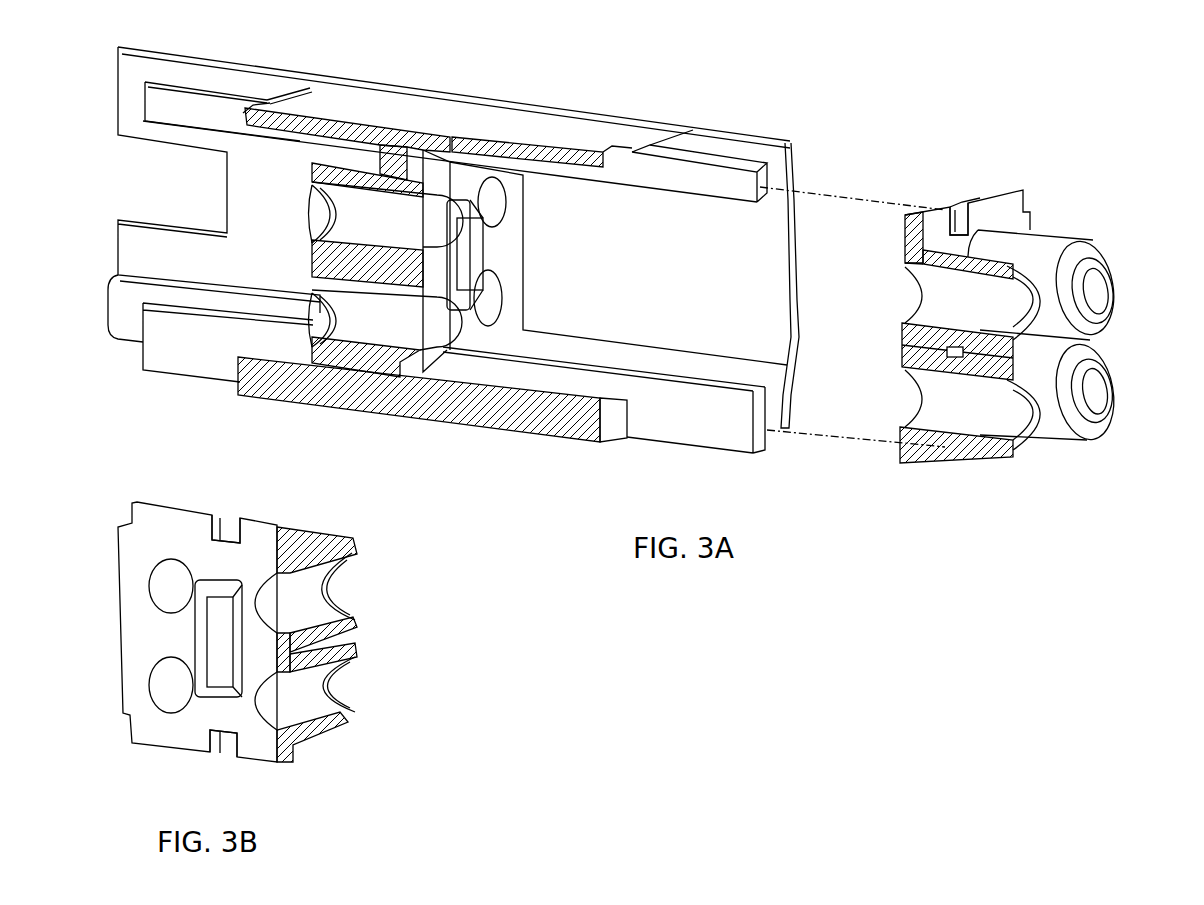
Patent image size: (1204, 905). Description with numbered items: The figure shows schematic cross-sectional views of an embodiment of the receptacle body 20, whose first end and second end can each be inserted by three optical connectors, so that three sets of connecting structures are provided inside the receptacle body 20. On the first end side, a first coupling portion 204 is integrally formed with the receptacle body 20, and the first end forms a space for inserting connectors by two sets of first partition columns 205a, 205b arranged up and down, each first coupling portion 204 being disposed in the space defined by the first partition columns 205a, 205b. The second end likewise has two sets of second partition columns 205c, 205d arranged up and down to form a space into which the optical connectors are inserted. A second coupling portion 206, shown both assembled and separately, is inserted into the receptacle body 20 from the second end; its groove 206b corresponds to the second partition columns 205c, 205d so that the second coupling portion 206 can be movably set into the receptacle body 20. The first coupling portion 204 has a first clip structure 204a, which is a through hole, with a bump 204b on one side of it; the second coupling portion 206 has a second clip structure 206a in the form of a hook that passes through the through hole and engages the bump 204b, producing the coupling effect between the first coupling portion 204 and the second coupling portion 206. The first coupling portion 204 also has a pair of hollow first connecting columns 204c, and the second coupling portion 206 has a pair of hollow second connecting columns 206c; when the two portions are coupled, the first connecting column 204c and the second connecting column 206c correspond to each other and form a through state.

In FIG. 3A, the receptacle body 20 is at (356, 70).
In FIG. 3A, the first coupling portion 204 is at (300, 262).
In FIG. 3A, the first clip structure 204a is at (470, 330).
In FIG. 3A, the bump 204b is at (470, 282).
In FIG. 3A, the first connecting column 204c is at (395, 145).
In FIG. 3A, the first partition column 205a is at (145, 100).
In FIG. 3A, the first partition column 205b is at (163, 355).
In FIG. 3A, the second partition column 205c is at (672, 185).
In FIG. 3A, the second partition column 205d is at (680, 435).
In FIG. 3A, the second coupling portion 206 is at (925, 200).
In FIG. 3B, the second coupling portion 206 is at (122, 510).
In FIG. 3B, the second clip structure 206a is at (200, 638).
In FIG. 3A, the groove 206b is at (958, 212).
In FIG. 3B, the groove 206b is at (225, 527).
In FIG. 3A, the second connecting column 206c is at (1088, 430).
In FIG. 3B, the second connecting column 206c is at (355, 622).